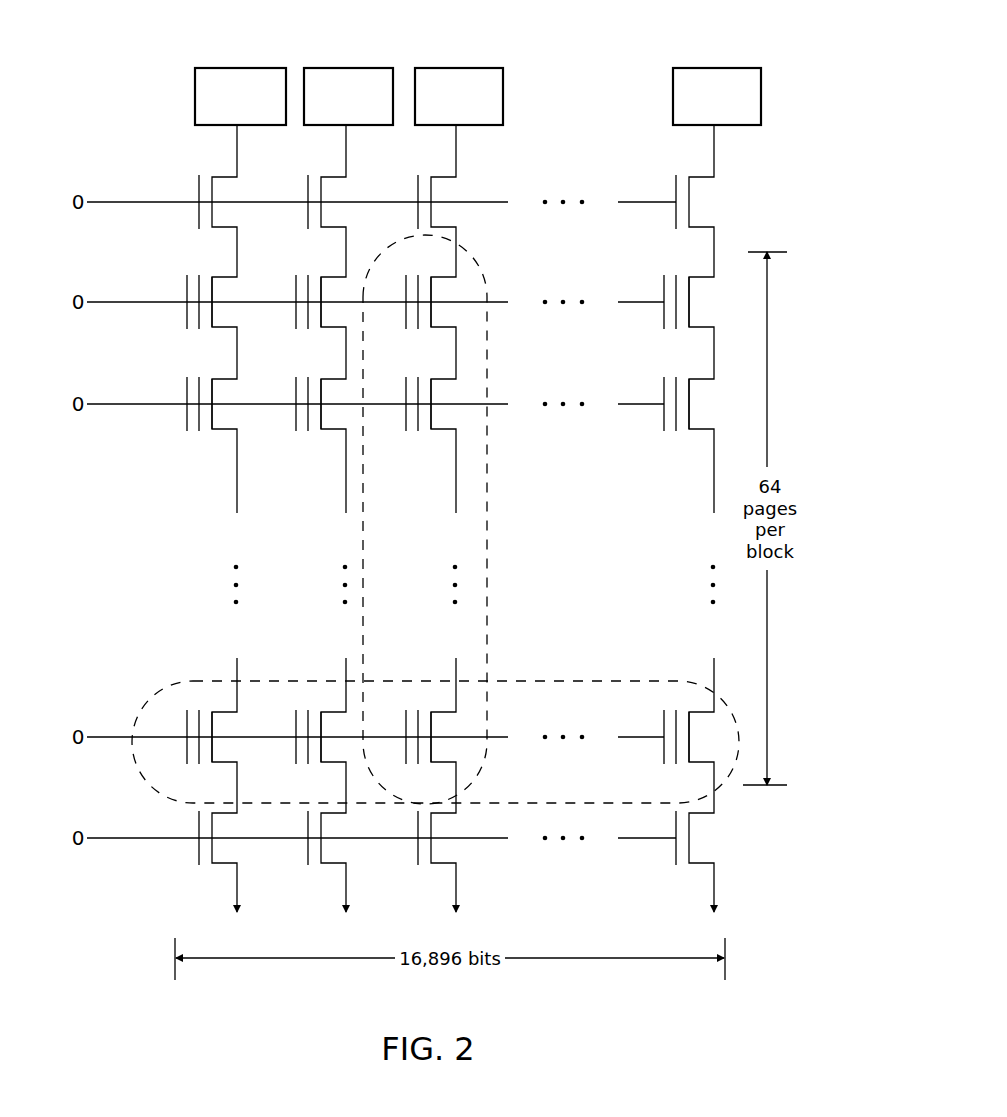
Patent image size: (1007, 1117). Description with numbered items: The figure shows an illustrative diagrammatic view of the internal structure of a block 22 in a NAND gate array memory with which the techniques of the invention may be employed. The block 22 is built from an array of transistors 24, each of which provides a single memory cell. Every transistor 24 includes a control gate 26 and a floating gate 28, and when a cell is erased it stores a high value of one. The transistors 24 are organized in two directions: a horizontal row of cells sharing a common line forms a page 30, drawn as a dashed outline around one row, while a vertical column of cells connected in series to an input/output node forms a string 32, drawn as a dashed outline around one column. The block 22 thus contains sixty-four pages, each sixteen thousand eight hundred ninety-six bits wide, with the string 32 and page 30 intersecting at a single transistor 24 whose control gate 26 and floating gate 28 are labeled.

The block 22 is at (571, 58).
The transistor 24 is at (427, 536).
The control gate 26 is at (402, 508).
The floating gate 28 is at (430, 520).
The page 30 is at (159, 690).
The string 32 is at (490, 528).